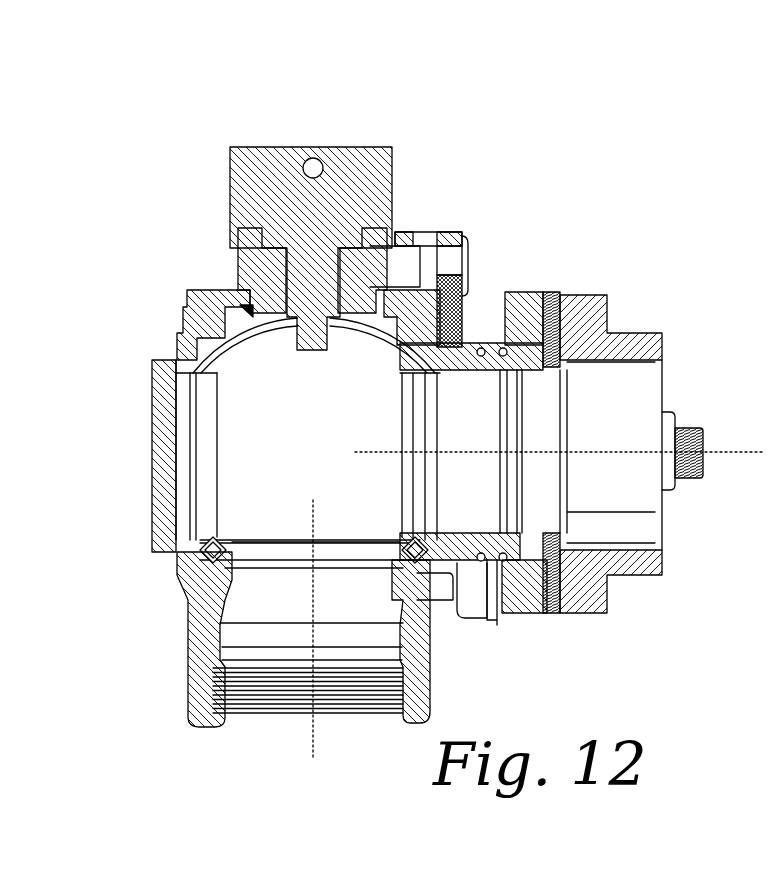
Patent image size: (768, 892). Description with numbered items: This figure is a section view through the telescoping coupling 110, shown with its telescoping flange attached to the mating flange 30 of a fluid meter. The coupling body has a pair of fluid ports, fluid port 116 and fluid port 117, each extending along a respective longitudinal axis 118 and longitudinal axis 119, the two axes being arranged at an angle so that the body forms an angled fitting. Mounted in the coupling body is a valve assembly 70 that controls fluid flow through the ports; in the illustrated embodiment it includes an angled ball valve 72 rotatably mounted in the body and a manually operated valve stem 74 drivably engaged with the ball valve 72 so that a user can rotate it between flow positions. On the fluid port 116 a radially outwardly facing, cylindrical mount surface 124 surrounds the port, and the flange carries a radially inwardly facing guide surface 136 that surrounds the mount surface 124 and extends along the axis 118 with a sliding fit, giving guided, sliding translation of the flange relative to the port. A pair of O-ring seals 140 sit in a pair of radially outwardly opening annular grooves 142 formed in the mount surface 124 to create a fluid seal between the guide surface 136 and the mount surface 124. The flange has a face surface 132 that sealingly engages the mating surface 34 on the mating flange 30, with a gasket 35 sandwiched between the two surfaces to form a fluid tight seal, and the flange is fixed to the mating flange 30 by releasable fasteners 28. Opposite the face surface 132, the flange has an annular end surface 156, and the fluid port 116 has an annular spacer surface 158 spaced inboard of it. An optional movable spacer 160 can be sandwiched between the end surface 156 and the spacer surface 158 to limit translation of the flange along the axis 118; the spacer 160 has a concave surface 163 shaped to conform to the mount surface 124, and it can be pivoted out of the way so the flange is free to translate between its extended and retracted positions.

The telescoping coupling 110 is at (437, 459).
The valve assembly 70 is at (284, 385).
The angled ball valve 72 is at (308, 440).
The valve stem 74 is at (346, 238).
The movable spacer 160 is at (438, 290).
The concave surface 163 is at (460, 350).
The O-ring seals 140 is at (499, 384).
The guide surface 136 is at (545, 424).
The face surface 132 is at (560, 284).
The mating flange 30 is at (619, 302).
The releasable fasteners 28 is at (692, 415).
The longitudinal axis 118 is at (558, 415).
The fluid port 116 is at (581, 455).
The annular grooves 142 is at (460, 513).
The annular end surface 156 is at (472, 611).
The annular spacer surface 158 is at (446, 636).
The cylindrical mount surface 124 is at (514, 639).
The mating surface 34 is at (540, 622).
The gasket 35 is at (627, 594).
The fluid port 117 is at (303, 680).
The longitudinal axis 119 is at (362, 630).